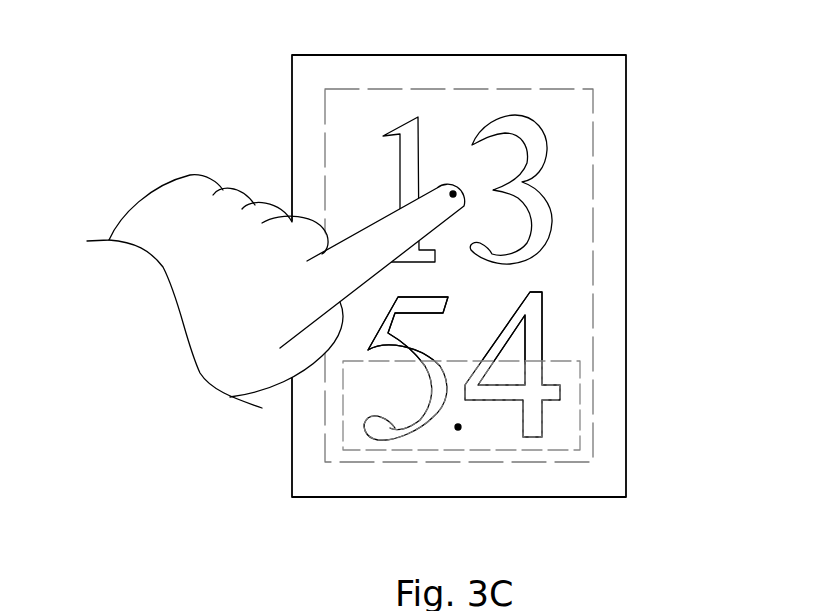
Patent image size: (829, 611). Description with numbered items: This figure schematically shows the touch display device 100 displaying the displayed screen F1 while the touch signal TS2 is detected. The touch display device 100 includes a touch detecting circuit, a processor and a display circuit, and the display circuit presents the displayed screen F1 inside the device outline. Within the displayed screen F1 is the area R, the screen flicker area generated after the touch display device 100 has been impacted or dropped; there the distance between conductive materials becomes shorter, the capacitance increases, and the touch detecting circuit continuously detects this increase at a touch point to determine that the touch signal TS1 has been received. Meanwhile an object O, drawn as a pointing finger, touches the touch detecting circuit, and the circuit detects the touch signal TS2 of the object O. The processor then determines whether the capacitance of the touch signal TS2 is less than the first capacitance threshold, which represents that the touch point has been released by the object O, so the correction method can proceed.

The touch display device 100 is at (626, 262).
The displayed screen F1 is at (593, 142).
The area R is at (580, 378).
The object O is at (363, 260).
The touch signal TS1 is at (458, 427).
The touch signal TS2 is at (453, 194).